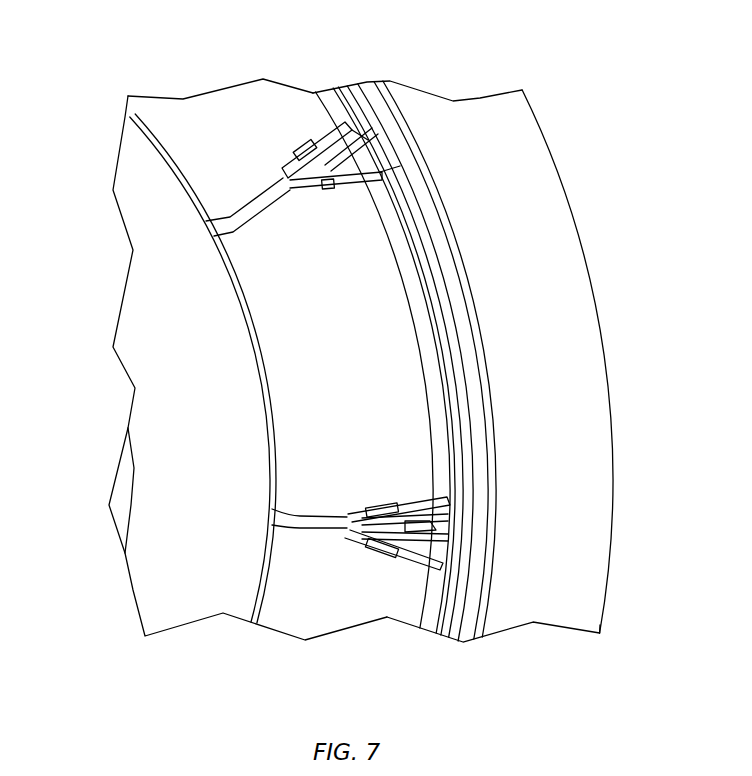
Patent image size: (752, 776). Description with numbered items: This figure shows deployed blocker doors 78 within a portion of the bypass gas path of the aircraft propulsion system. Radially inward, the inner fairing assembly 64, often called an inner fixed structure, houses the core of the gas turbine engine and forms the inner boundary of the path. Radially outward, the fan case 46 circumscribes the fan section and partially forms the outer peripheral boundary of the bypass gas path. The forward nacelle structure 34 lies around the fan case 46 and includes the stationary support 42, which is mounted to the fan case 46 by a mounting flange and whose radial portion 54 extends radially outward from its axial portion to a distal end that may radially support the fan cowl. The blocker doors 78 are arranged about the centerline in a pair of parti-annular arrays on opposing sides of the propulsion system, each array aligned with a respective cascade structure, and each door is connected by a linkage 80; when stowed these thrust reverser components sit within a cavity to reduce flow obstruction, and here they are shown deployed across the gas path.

The forward nacelle structure 34 is at (606, 288).
The stationary support 42 is at (598, 587).
The fan case 46 is at (463, 628).
The radial portion 54 is at (563, 632).
The inner fairing assembly 64 is at (133, 321).
The blocker door 78 is at (200, 102).
The linkage 80 is at (378, 152).